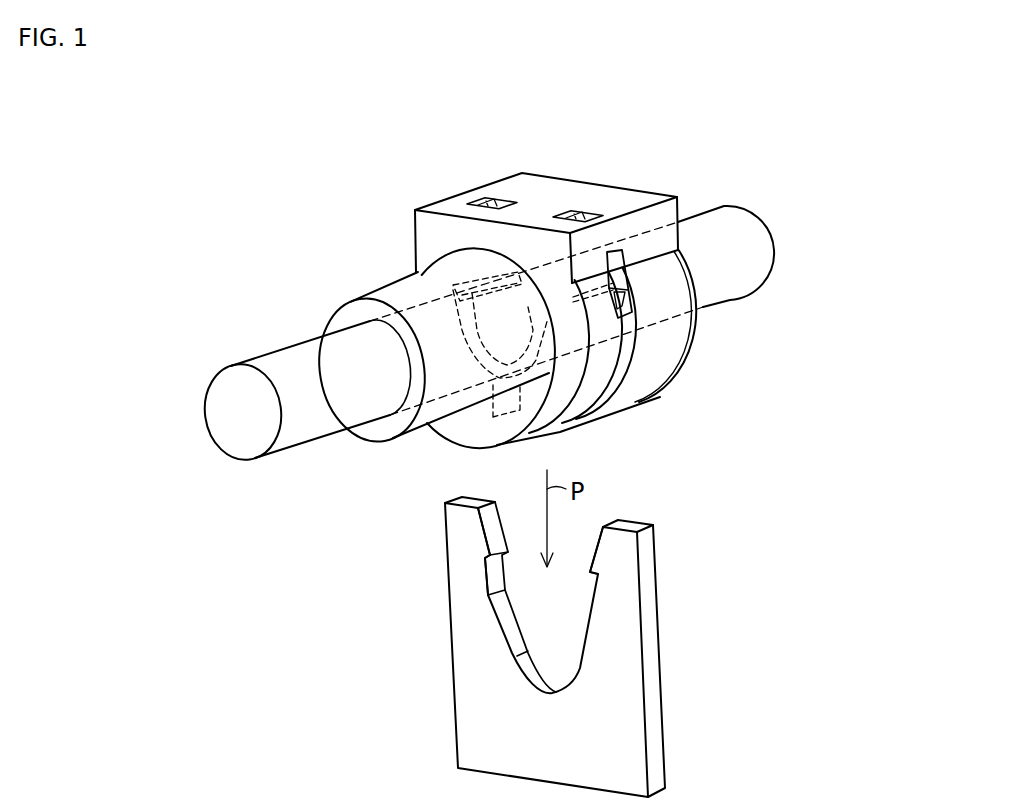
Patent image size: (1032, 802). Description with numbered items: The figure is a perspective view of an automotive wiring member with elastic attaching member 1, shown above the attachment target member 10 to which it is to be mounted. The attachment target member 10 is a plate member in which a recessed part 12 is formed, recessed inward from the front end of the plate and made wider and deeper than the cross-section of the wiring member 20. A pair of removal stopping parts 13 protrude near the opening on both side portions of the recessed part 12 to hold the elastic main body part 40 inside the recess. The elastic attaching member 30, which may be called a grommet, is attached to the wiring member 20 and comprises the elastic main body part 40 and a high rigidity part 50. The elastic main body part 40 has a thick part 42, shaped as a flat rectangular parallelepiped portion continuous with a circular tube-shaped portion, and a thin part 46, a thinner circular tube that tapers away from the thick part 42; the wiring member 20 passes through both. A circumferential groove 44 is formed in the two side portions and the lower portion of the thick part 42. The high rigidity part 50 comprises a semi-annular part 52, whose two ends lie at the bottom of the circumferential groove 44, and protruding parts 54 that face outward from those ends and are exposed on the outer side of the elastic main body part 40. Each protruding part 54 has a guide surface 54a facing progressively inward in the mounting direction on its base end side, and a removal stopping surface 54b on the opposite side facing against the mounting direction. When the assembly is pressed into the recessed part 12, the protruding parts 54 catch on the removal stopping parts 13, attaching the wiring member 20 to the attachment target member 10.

The automotive wiring member with elastic attaching member 1 is at (493, 122).
The attachment target member 10 is at (660, 670).
The recessed part 12 is at (610, 603).
The removal stopping part 13 is at (507, 553).
The wiring member 20 is at (280, 358).
The elastic attaching member 30 is at (426, 198).
The elastic main body part 40 is at (641, 192).
The thick part 42 is at (605, 190).
The circumferential groove 44 is at (613, 410).
The thin part 46 is at (390, 293).
The high rigidity part 50 is at (478, 364).
The semi-annular part 52 is at (540, 364).
The protruding part 54 is at (628, 305).
The guide surface 54a is at (624, 315).
The removal stopping surface 54b is at (626, 290).